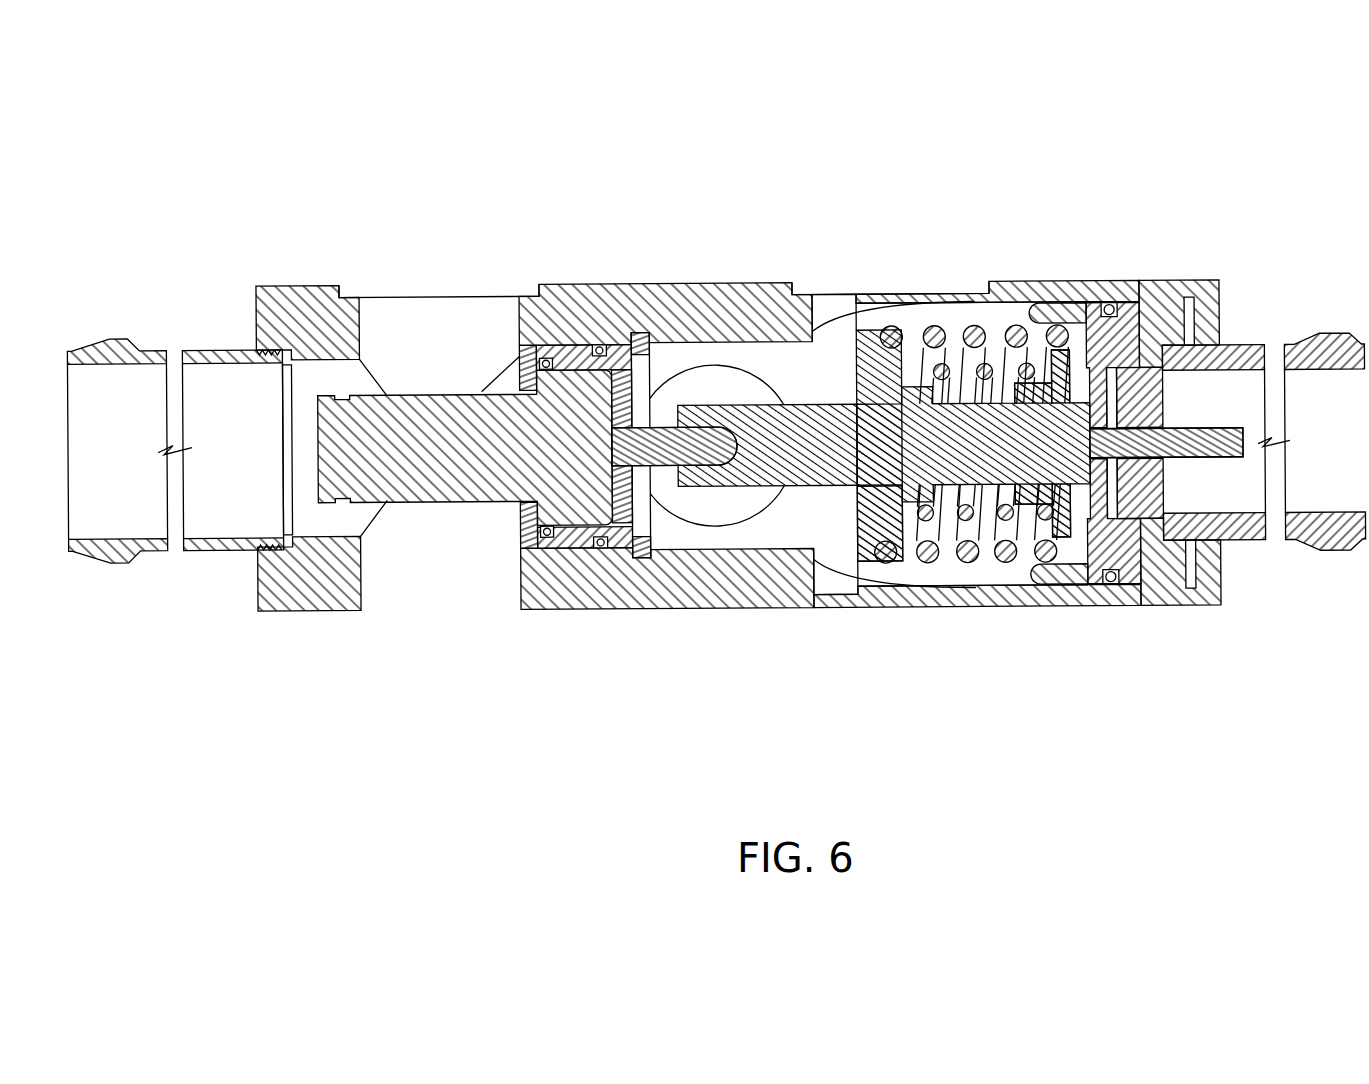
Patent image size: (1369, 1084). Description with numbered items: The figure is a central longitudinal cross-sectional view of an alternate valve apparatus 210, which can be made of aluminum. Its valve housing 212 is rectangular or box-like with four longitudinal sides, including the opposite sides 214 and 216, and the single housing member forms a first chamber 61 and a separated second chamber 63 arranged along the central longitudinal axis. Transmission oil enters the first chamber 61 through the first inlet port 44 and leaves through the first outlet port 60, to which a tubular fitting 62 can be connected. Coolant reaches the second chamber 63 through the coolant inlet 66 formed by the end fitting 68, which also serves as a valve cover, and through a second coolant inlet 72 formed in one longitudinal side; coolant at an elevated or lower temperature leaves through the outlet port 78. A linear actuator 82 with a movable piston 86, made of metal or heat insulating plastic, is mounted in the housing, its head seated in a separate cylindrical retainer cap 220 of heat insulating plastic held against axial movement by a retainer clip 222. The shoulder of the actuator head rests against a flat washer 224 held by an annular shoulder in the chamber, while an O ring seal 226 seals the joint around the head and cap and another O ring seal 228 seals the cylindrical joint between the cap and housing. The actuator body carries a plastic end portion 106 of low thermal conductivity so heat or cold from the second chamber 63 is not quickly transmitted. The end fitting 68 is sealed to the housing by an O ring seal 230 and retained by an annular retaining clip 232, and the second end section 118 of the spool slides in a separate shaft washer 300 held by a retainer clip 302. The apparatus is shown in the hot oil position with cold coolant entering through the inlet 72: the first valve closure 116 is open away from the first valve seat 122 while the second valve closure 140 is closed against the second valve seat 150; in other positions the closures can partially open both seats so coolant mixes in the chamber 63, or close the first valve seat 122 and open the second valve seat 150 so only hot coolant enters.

The first inlet port 44 is at (468, 295).
The first outlet port 60 is at (290, 520).
The first chamber 61 is at (337, 514).
The tubular fitting 62 is at (215, 546).
The second chamber 63 is at (1000, 297).
The coolant inlet 66 is at (1343, 429).
The end fitting 68 is at (1243, 551).
The second coolant inlet 72 is at (727, 500).
The outlet port 78 is at (878, 311).
The linear actuator 82 is at (485, 470).
The movable piston 86 is at (740, 418).
The plastic end portion 106 is at (645, 417).
The first valve closure 116 is at (862, 568).
The second end section 118 is at (1203, 465).
The first valve seat 122 is at (833, 330).
The second valve closure 140 is at (1080, 547).
The second valve seat 150 is at (1065, 547).
The valve apparatus 210 is at (925, 263).
The valve housing 212 is at (300, 282).
The side 214 is at (685, 285).
The side 216 is at (425, 607).
The retainer cap 220 is at (570, 284).
The retainer clip 222 is at (656, 294).
The flat washer 224 is at (528, 547).
The O ring seal 226 is at (520, 356).
The O ring seal 228 is at (618, 297).
The O ring seal 230 is at (1103, 304).
The annular retaining clip 232 is at (1195, 298).
The shaft washer 300 is at (1163, 416).
The retainer clip 302 is at (1070, 302).